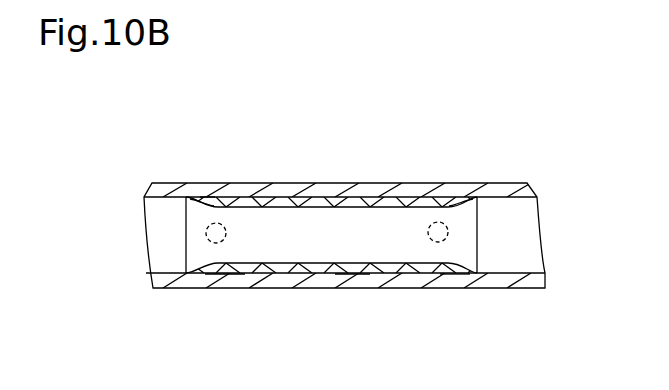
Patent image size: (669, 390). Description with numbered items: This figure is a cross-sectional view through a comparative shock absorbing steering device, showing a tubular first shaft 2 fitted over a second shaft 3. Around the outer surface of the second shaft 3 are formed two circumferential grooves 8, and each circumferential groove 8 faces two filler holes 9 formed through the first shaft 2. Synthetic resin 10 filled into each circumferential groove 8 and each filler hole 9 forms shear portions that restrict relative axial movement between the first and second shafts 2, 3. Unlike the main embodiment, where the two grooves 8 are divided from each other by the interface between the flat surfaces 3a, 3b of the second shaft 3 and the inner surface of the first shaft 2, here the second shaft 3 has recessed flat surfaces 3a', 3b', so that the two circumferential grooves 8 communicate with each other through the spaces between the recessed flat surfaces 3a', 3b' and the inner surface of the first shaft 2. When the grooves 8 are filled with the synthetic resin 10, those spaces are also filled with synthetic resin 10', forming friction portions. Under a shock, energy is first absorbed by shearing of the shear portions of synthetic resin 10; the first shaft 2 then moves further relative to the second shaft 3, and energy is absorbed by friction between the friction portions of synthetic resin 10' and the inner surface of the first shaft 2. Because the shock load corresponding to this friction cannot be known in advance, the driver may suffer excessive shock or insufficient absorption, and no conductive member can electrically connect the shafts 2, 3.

The first shaft 2 is at (226, 189).
The second shaft 3 is at (167, 232).
The flat surface 3a is at (366, 164).
The flat surface 3b is at (368, 305).
The recessed flat surface 3a' is at (336, 166).
The recessed flat surface 3b' is at (336, 319).
The circumferential groove 8 is at (210, 203).
The filler hole 9 is at (213, 244).
The synthetic resin (shear portion) 10 is at (352, 323).
The synthetic resin (friction portion) 10' is at (375, 322).